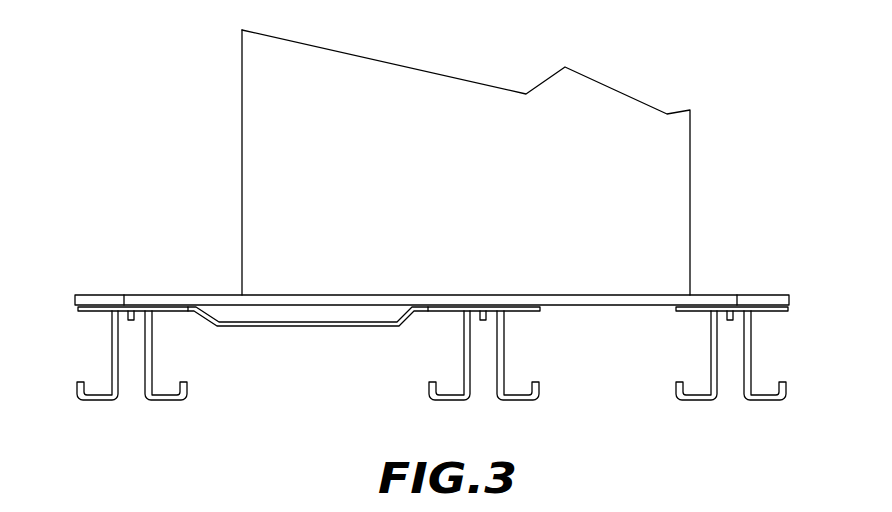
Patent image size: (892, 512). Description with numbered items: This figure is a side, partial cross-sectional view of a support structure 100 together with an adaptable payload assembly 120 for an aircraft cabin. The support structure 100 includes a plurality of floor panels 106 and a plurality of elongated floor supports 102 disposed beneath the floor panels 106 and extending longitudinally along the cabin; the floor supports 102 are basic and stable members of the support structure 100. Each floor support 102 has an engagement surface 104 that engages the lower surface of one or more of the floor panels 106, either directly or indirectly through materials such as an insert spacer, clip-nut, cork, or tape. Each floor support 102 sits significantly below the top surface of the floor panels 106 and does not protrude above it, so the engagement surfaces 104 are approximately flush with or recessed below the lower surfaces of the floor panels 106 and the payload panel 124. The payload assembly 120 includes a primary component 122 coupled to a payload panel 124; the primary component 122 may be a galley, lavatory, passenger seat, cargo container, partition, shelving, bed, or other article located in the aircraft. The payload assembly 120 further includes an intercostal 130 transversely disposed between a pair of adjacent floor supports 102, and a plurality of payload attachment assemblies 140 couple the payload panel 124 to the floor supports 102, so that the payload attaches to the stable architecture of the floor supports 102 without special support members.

The support structure 100 is at (103, 224).
The floor support 102 is at (216, 364).
The engagement surface 104 is at (93, 312).
The floor panel 106 is at (103, 295).
The adaptable payload assembly 120 is at (156, 48).
The primary component 122 is at (241, 113).
The payload panel 124 is at (718, 295).
The intercostal 130 is at (307, 325).
The payload attachment assembly 140 is at (139, 334).